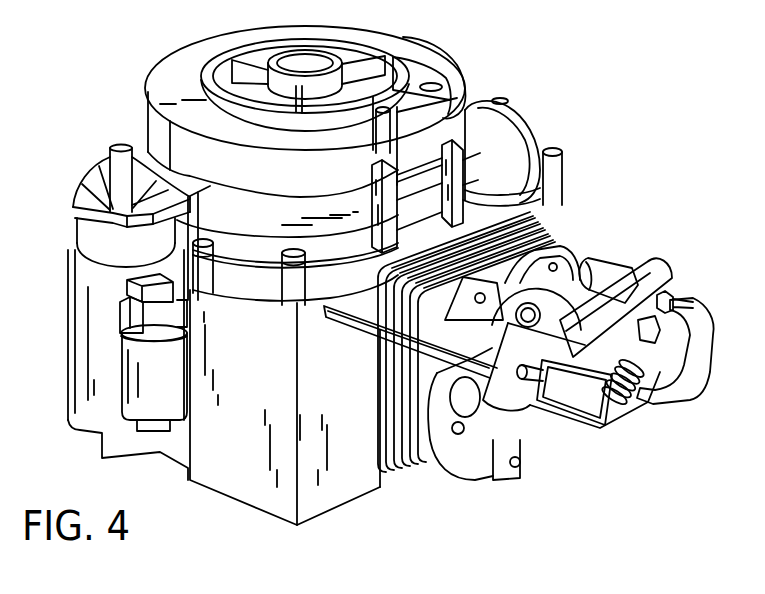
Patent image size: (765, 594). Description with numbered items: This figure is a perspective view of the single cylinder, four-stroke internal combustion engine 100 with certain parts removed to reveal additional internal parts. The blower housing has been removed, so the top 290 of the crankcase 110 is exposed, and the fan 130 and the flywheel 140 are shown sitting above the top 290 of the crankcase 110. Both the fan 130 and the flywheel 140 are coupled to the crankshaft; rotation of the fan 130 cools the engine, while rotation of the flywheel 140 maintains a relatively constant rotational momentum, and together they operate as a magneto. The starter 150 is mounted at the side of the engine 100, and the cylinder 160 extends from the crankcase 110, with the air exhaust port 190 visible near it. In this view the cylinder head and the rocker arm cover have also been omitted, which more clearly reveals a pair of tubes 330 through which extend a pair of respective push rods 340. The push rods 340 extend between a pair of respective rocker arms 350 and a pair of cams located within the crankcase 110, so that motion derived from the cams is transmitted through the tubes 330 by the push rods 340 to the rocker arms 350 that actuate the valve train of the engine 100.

The single cylinder engine 100 is at (620, 55).
The crankcase 110 is at (248, 508).
The fan 130 is at (405, 34).
The flywheel 140 is at (136, 85).
The starter 150 is at (72, 426).
The cylinder 160 is at (415, 477).
The air exhaust port 190 is at (458, 460).
The top of the crankcase 290 is at (515, 118).
The tubes 330 is at (353, 324).
The push rods 340 is at (678, 302).
The rocker arms 350 is at (694, 370).